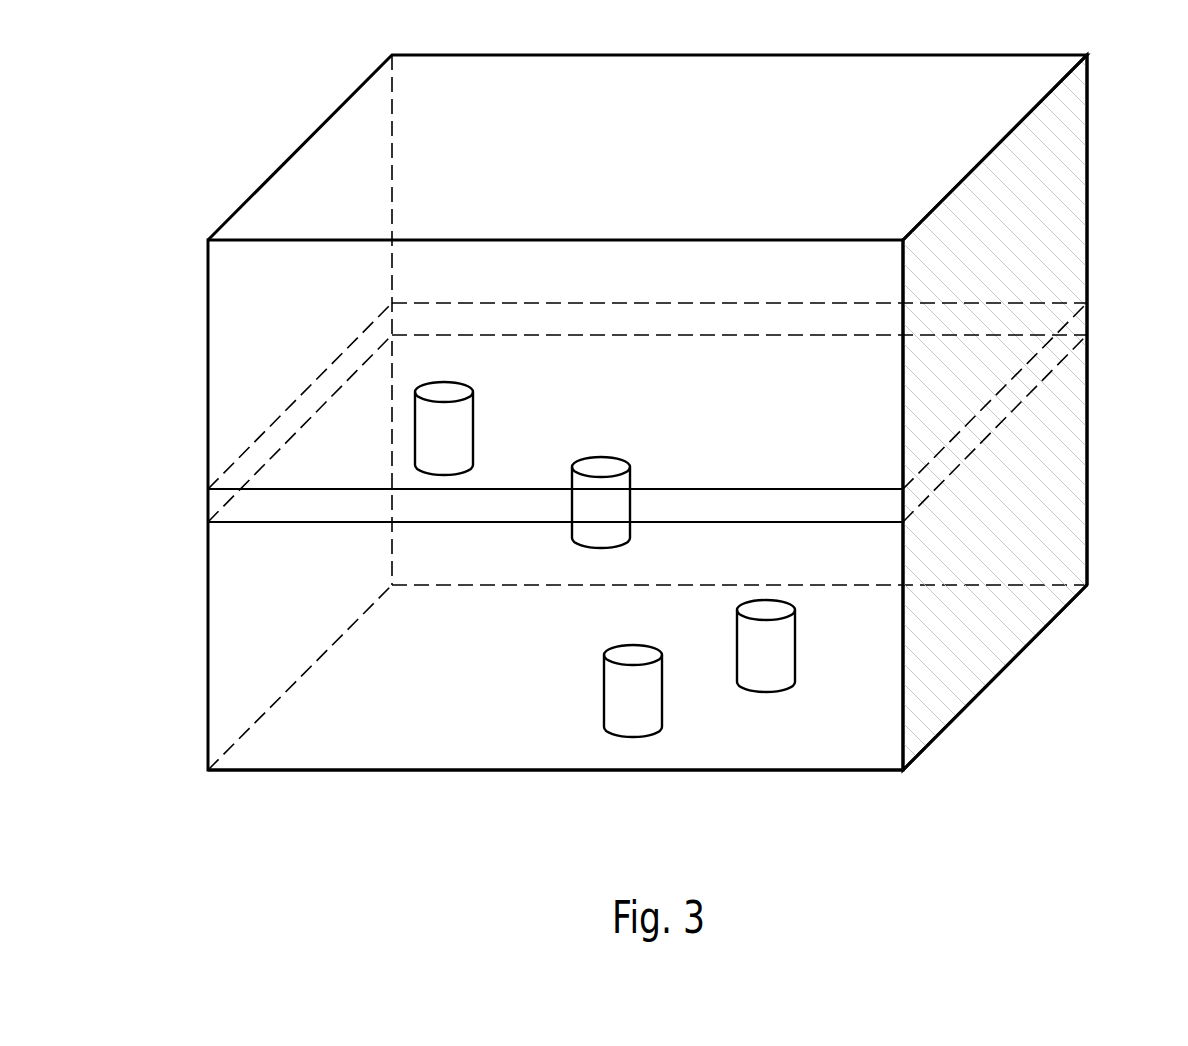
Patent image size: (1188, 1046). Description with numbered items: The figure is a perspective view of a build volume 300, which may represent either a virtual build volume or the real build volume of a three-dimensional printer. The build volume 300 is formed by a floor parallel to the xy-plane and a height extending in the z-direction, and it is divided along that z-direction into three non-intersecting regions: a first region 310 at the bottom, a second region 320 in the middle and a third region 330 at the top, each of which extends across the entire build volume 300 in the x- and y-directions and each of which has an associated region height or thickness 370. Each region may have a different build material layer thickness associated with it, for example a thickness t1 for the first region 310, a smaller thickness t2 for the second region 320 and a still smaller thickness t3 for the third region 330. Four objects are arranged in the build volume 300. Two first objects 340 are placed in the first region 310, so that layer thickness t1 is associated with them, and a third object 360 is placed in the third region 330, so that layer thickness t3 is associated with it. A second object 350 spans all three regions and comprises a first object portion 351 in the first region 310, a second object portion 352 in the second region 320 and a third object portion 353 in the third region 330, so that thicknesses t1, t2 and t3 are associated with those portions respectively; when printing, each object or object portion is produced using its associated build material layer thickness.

The build volume 300 is at (175, 837).
The first region 310 is at (698, 757).
The second region 320 is at (1060, 351).
The third region 330 is at (878, 286).
The first objects 340 is at (605, 700).
The second object 350 is at (597, 455).
The first object portion 351 is at (618, 530).
The second object portion 352 is at (618, 505).
The third object portion 353 is at (618, 482).
The third object 360 is at (473, 425).
The region height 370 is at (196, 770).